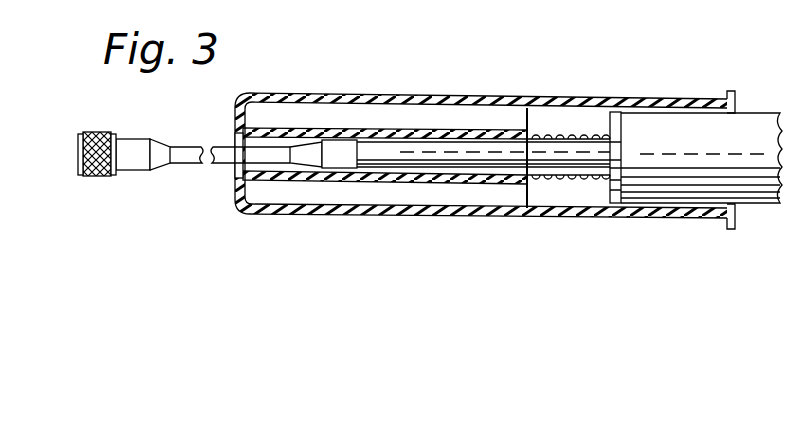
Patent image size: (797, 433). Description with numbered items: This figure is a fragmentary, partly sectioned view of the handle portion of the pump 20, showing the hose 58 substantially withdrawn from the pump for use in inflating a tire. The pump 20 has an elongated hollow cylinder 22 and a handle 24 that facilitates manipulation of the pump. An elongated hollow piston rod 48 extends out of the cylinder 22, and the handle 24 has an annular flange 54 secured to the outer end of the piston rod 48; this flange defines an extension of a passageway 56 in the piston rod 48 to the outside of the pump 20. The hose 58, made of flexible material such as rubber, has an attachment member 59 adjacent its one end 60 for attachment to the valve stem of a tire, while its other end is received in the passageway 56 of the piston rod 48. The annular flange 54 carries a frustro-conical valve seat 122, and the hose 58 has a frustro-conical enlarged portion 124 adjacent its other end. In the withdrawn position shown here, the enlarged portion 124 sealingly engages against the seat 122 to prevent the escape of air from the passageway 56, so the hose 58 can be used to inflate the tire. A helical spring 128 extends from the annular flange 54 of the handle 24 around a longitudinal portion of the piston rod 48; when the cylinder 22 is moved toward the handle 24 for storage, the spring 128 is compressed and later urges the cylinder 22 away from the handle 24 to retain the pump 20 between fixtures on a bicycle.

The pump 20 is at (520, 96).
The elongated hollow cylinder 22 is at (748, 117).
The handle 24 is at (452, 98).
The piston rod 48 is at (586, 138).
The annular flange 54 is at (348, 127).
The passageway 56 is at (386, 150).
The hose 58 is at (197, 143).
The attachment member 59 is at (105, 175).
The one end of the hose 60 is at (134, 138).
The frustro-conical valve seat 122 is at (305, 142).
The enlarged portion 124 is at (339, 160).
The helical spring 128 is at (583, 180).